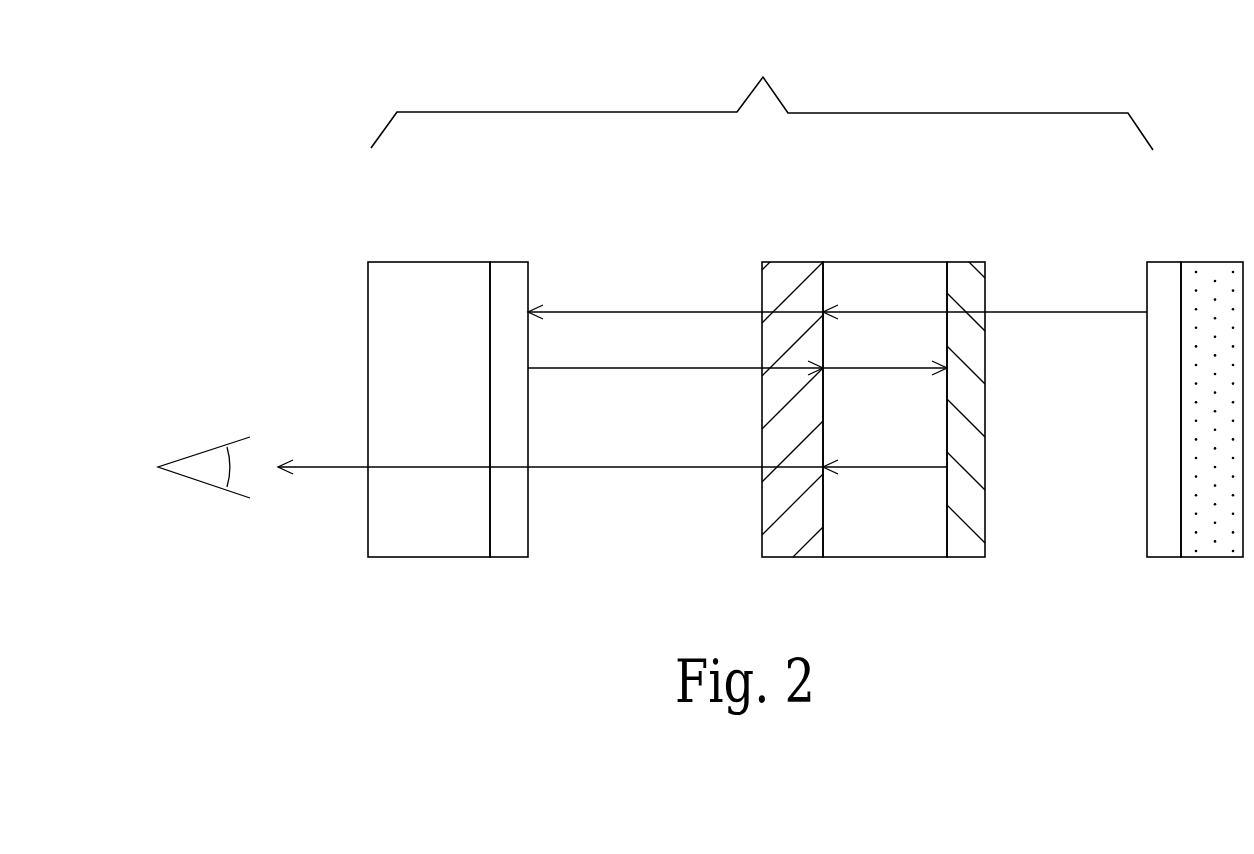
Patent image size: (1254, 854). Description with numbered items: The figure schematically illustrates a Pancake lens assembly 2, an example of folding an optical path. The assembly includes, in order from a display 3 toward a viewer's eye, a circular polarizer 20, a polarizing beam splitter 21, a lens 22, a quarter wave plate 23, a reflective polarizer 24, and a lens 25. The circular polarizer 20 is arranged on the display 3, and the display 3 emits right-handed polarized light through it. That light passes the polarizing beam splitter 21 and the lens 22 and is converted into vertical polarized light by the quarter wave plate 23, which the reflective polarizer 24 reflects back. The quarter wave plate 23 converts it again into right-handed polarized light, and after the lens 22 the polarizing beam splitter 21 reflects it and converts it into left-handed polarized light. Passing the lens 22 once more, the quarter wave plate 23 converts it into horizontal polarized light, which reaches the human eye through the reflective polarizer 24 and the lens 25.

The Pancake lens assembly 2 is at (762, 89).
The display 3 is at (1213, 275).
The circular polarizer 20 is at (1151, 271).
The polarizing beam splitter 21 is at (973, 278).
The lens 22 is at (903, 270).
The quarter wave plate 23 is at (793, 268).
The reflective polarizer 24 is at (515, 277).
The lens 25 is at (408, 277).